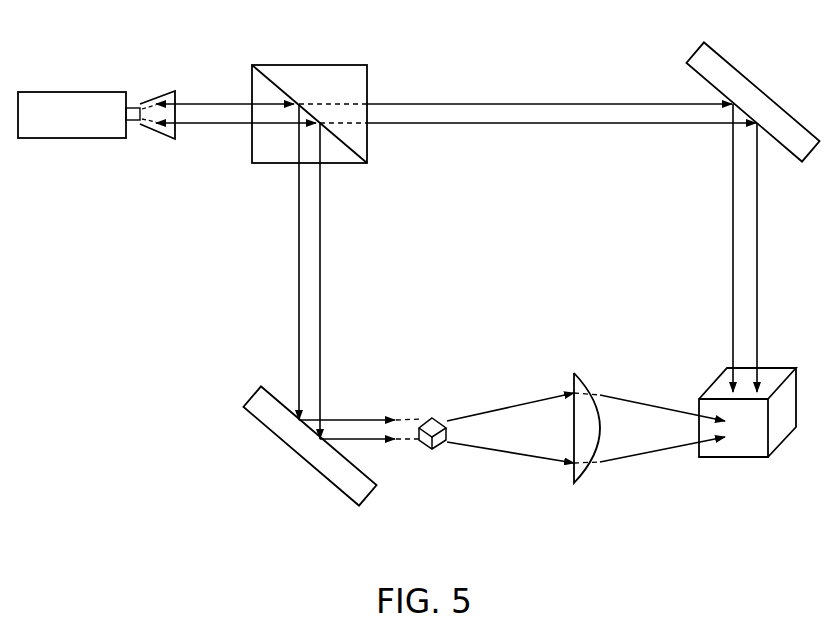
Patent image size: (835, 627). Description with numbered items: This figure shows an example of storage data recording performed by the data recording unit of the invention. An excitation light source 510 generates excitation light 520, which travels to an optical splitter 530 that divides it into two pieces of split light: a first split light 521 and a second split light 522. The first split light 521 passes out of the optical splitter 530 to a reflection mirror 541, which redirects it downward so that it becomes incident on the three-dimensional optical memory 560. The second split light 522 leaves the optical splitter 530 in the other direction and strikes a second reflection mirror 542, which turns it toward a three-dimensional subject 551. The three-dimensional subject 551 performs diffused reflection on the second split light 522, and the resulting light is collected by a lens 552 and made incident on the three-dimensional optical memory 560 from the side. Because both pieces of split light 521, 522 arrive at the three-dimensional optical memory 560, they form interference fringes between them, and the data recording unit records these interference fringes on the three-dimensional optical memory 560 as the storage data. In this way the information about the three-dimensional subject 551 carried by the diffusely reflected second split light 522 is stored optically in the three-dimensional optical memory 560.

The excitation light source 510 is at (70, 92).
The excitation light 520 is at (207, 105).
The first split light 521 is at (550, 103).
The second split light 522 is at (308, 258).
The optical splitter 530 is at (308, 65).
The reflection mirror 541 is at (745, 78).
The reflection mirror 542 is at (331, 478).
The 3D subject 551 is at (432, 418).
The lens 552 is at (574, 373).
The 3D optical memory 560 is at (733, 458).